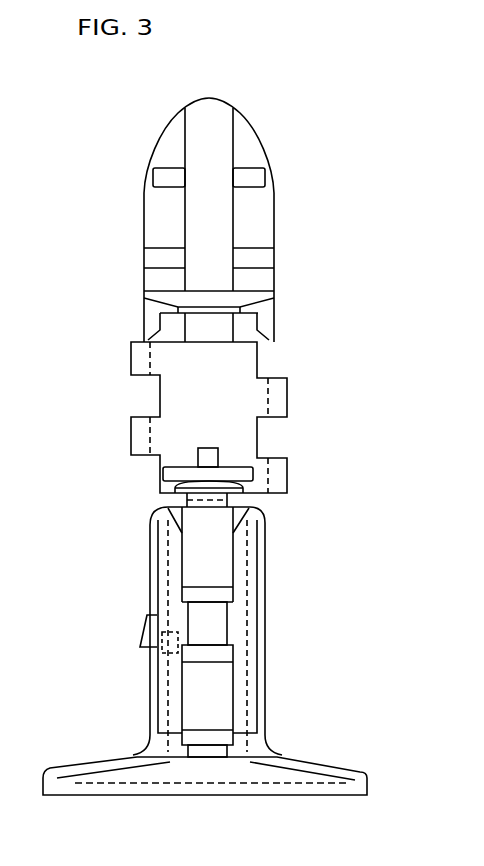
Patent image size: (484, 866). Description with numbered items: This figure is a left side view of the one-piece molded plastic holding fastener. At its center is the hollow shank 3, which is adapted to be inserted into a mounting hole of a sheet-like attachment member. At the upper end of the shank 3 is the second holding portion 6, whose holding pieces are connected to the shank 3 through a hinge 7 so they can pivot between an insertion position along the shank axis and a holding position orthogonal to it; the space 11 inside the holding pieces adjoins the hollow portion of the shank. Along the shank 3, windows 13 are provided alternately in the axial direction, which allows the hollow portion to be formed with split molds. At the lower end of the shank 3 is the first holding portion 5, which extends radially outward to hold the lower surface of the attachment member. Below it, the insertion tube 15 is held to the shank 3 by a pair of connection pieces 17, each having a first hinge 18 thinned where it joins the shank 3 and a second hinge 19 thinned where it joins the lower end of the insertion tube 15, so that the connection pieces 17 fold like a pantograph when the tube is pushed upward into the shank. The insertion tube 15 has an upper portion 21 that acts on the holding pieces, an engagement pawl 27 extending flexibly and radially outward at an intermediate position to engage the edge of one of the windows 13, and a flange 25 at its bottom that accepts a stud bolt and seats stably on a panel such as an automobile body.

The space 11 is at (215, 154).
The second holding portion 6 is at (255, 218).
The hinge 7 is at (220, 328).
The shank 3 is at (277, 403).
The windows 13 is at (265, 363).
The first holding portion 5 is at (242, 472).
The insertion tube 15 is at (158, 578).
The first hinge 18 is at (228, 503).
The connection piece 17 is at (218, 567).
The upper portion 21 is at (212, 625).
The engagement pawl 27 is at (140, 637).
The second hinge 19 is at (215, 745).
The flange 25 is at (110, 763).